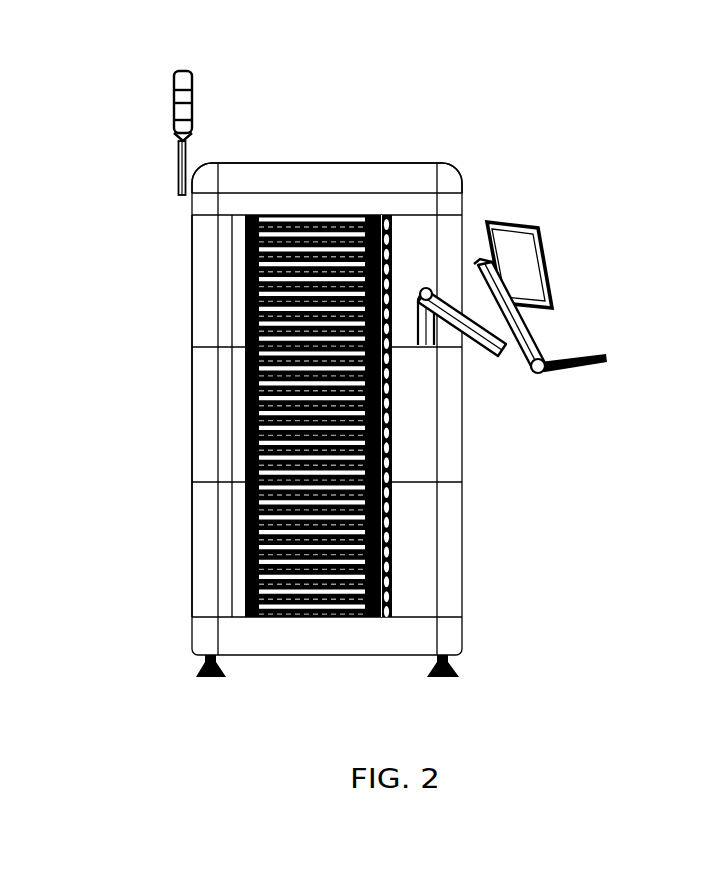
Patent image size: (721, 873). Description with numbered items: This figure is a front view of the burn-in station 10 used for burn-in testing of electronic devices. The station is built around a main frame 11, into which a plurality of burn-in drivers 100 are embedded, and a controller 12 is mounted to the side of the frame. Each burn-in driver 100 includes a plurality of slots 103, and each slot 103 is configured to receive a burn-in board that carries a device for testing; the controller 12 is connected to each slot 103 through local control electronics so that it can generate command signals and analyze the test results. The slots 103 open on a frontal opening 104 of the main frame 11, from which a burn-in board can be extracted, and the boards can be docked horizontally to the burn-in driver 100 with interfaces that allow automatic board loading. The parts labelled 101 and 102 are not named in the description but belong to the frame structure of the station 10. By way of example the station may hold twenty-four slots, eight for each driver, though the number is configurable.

The burn-in station 10 is at (552, 177).
The main frame 11 is at (335, 177).
The controller 12 is at (527, 283).
The burn-in driver 100 is at (437, 567).
The upright support column 101 is at (190, 298).
The lower conveyor guide rail 102 is at (243, 543).
The slot 103 is at (247, 408).
The frontal opening 104 is at (245, 228).